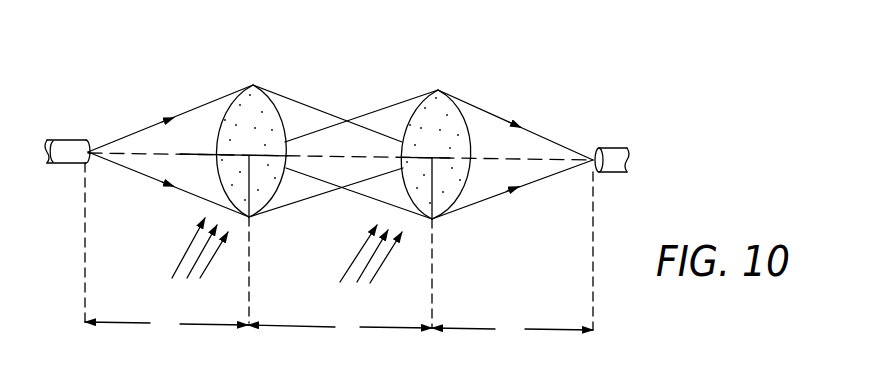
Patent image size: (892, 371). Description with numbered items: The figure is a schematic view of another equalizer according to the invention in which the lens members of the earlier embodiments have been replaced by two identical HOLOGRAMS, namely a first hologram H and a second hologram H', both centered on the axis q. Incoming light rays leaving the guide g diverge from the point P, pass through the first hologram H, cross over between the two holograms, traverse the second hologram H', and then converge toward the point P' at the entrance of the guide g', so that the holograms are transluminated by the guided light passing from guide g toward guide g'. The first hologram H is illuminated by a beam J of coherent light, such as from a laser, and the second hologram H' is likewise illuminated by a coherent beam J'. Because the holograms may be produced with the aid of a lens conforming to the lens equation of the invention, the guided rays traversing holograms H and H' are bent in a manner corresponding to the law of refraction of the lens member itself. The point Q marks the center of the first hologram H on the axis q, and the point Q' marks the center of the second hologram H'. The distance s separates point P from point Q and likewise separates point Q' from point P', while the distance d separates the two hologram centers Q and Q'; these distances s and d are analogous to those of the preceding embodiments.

The point P is at (169, 203).
The guide g is at (65, 175).
The axis q is at (193, 153).
The point Q is at (214, 186).
The hologram H is at (256, 204).
The beam of coherent light J is at (194, 265).
The holograms HOLOGRAMS is at (413, 93).
The point Q' is at (466, 188).
The hologram H' is at (436, 209).
The beam of coherent light J' is at (366, 269).
The point P' is at (512, 210).
The guide g' is at (627, 141).
The distance s is at (339, 327).
The distance d is at (340, 328).